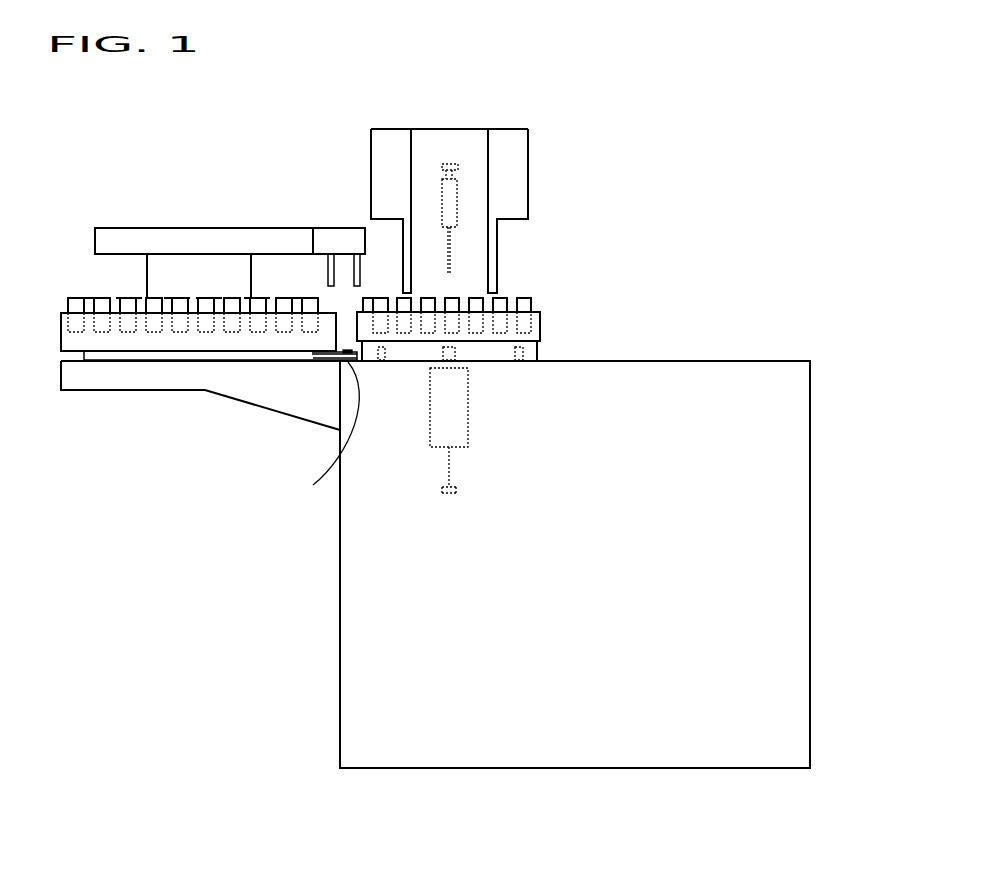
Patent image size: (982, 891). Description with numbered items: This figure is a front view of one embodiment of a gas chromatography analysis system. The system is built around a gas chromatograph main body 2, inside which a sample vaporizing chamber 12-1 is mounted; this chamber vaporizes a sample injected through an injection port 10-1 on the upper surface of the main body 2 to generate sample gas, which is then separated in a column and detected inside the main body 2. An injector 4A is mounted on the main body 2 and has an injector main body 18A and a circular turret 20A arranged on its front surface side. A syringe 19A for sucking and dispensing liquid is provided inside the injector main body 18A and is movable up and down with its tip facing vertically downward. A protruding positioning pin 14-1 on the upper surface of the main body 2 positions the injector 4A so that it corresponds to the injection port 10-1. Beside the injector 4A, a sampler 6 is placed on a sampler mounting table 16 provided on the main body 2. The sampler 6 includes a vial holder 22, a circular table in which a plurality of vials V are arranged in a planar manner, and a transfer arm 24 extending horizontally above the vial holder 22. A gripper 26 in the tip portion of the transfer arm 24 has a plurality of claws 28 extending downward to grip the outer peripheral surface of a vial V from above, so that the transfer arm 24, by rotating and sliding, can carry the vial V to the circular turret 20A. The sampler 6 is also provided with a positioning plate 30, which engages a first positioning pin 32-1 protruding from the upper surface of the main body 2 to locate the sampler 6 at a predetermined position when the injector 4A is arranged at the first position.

The gas chromatograph main body 2 is at (813, 380).
The injector 4A is at (486, 190).
The sampler 6 is at (216, 225).
The injection port 10-1 is at (452, 355).
The sample vaporizing chamber 12-1 is at (463, 417).
The positioning pin 14-1 is at (523, 352).
The sampler mounting table 16 is at (217, 383).
The injector main body 18A is at (513, 192).
The syringe 19A is at (457, 200).
The circular turret 20A is at (542, 318).
The vial holder 22 is at (167, 340).
The transfer arm 24 is at (227, 240).
The gripper 26 is at (338, 237).
The claws 28 is at (327, 268).
The positioning plate 30 is at (330, 359).
The first positioning pin 32-1 is at (310, 432).
The vial V is at (76, 300).